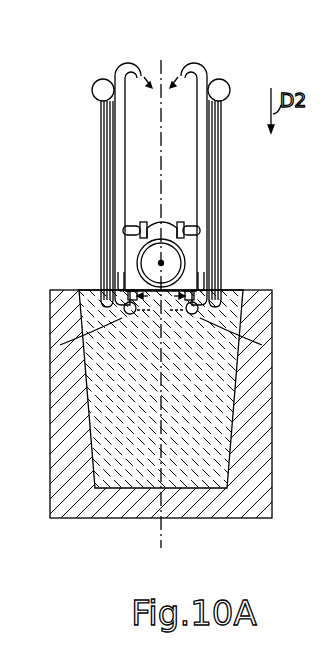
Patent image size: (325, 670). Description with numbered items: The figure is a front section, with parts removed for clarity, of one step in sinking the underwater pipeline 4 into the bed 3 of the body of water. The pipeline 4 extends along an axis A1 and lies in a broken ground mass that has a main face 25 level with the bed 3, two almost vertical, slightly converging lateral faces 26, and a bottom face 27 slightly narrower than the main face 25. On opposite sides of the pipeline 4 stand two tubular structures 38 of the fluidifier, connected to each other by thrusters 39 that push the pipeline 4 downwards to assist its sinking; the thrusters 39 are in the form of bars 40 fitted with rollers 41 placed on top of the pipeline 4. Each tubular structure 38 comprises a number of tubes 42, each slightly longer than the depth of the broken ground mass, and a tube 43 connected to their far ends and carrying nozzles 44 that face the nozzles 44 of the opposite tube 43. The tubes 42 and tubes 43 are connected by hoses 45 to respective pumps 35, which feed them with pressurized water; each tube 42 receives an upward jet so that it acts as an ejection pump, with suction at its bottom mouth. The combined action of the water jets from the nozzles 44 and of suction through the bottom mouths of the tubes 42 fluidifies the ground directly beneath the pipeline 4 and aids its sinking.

The bed 3 is at (262, 296).
The underwater pipeline 4 is at (184, 268).
The main face 25 is at (86, 286).
The lateral faces 26 is at (98, 462).
The bottom face 27 is at (187, 480).
The pump 35 is at (98, 89).
The tubular structure 38 is at (155, 164).
The thrusters 39 is at (157, 194).
The bars 40 is at (190, 222).
The rollers 41 is at (156, 219).
The tubes 42 is at (120, 104).
The tube 43 is at (124, 313).
The nozzles 44 is at (60, 345).
The hoses 45 is at (104, 127).
The axis A1 is at (163, 262).